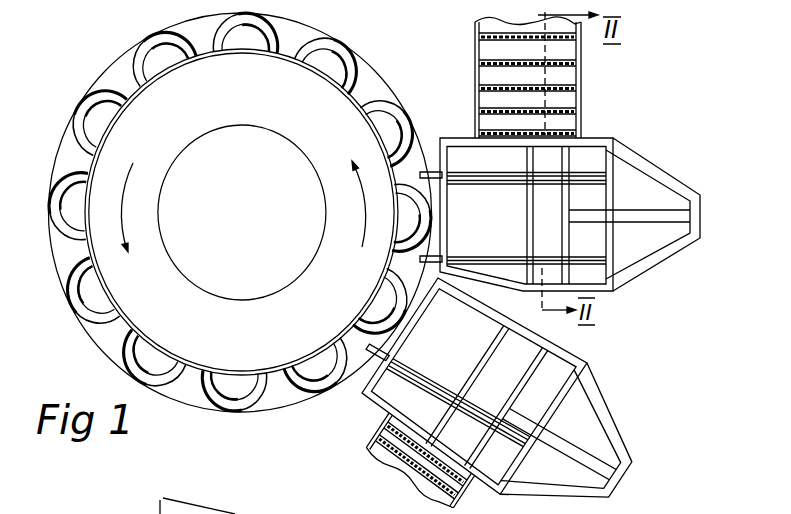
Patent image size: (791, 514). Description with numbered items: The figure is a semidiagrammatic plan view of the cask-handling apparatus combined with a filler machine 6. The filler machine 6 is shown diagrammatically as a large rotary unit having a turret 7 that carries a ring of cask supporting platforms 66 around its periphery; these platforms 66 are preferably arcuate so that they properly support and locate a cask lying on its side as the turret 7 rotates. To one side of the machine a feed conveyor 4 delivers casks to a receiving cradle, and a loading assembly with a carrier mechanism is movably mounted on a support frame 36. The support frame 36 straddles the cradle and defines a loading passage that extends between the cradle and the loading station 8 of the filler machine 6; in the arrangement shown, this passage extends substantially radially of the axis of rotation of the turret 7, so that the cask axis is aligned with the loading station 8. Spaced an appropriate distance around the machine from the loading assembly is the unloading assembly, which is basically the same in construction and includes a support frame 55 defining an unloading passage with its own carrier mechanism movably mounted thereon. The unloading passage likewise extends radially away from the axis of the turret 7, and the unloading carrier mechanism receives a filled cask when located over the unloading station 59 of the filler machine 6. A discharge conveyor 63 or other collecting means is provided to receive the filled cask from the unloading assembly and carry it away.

The feed conveyor 4 is at (583, 88).
The filler machine 6 is at (343, 33).
The turret 7 is at (157, 113).
The loading station 8 is at (384, 200).
The support frame 36 is at (650, 168).
The support frame 55 is at (592, 388).
The unloading station 59 is at (359, 302).
The discharge conveyor 63 is at (362, 433).
The cask supporting platforms 66 is at (132, 68).